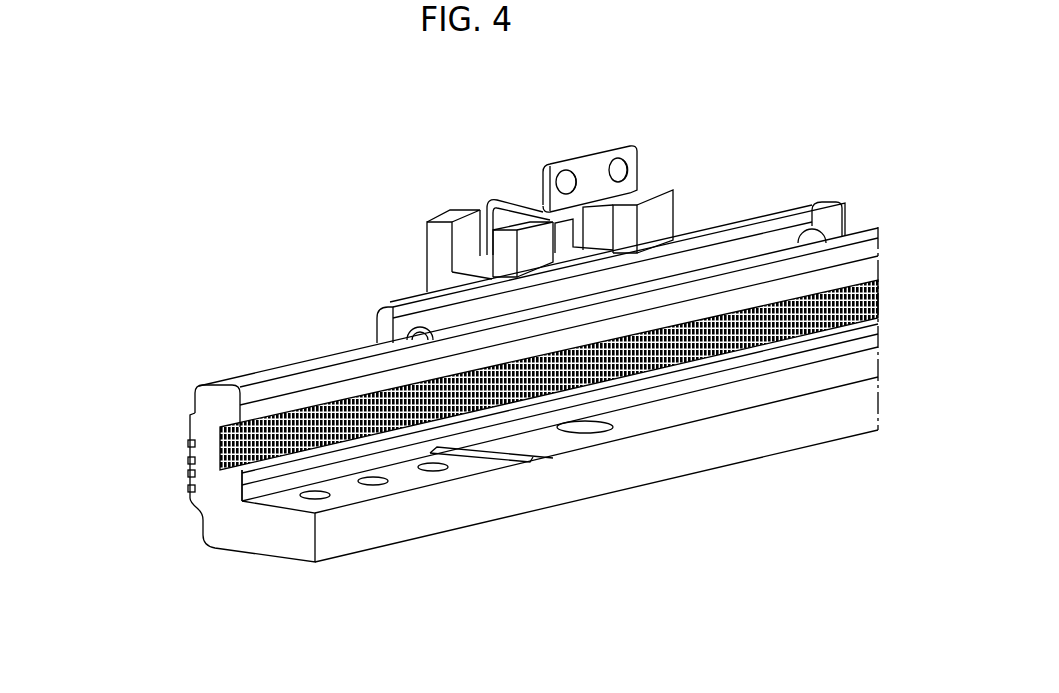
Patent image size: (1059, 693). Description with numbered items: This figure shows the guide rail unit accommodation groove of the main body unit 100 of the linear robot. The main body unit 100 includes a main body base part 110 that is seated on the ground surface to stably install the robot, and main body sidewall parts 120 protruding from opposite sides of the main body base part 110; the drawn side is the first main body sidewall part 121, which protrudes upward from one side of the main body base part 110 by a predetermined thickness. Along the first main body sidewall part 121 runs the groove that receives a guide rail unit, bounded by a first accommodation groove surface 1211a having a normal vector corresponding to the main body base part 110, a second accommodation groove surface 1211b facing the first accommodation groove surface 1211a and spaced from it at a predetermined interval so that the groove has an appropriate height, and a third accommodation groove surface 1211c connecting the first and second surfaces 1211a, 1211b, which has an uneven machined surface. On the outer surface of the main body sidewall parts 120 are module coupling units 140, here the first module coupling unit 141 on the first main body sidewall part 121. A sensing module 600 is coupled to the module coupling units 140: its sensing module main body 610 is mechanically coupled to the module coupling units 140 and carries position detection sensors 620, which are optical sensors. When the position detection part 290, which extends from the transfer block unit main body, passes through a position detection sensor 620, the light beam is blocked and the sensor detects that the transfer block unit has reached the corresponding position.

The main body unit 100 is at (460, 446).
The main body base part 110 is at (410, 522).
The main body sidewall parts 120 is at (510, 364).
The first main body sidewall part 121 is at (205, 402).
The first accommodation groove surface 1211a is at (236, 468).
The second accommodation groove surface 1211b is at (226, 415).
The third accommodation groove surface 1211c is at (190, 454).
The module coupling units 140 is at (118, 443).
The first module coupling unit 141 is at (136, 457).
The sensing module 600 is at (561, 214).
The sensing module main body 610 is at (384, 320).
The position detection sensors 620 is at (441, 230).
The position detection part 290 is at (590, 180).